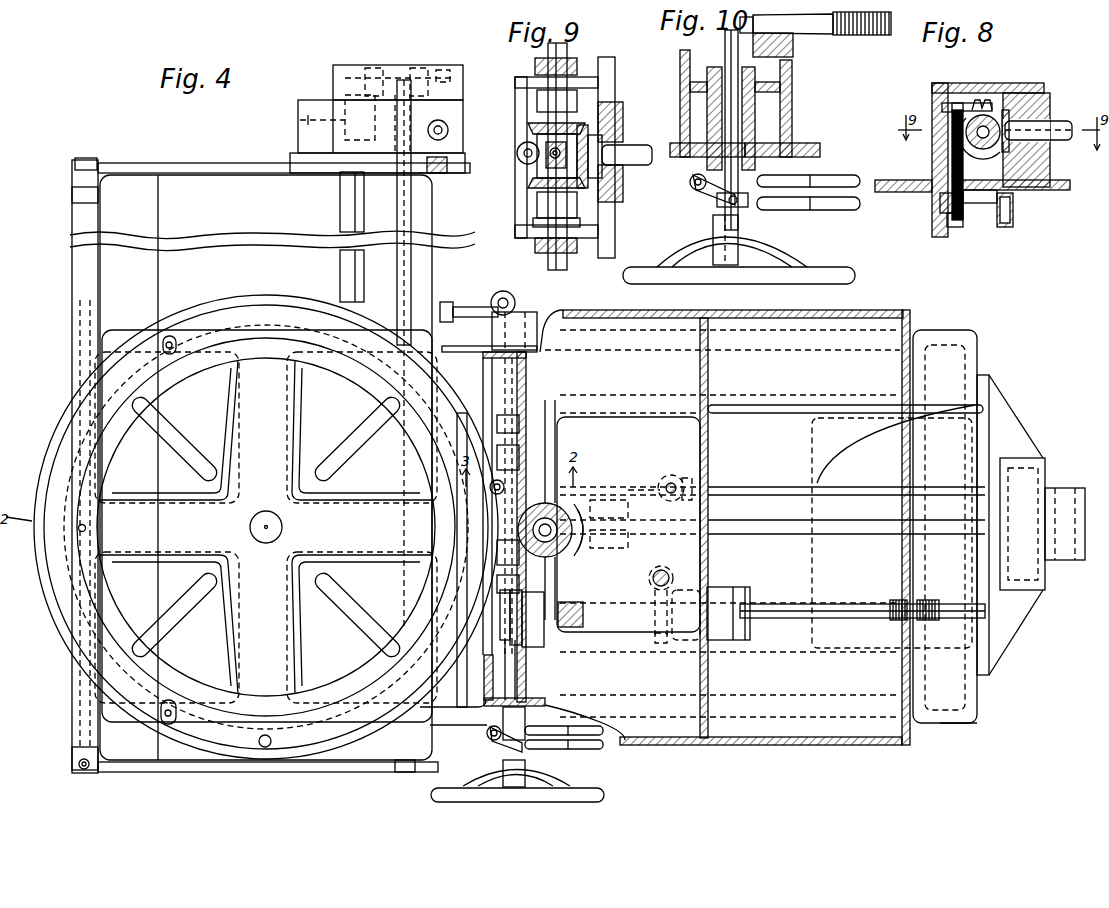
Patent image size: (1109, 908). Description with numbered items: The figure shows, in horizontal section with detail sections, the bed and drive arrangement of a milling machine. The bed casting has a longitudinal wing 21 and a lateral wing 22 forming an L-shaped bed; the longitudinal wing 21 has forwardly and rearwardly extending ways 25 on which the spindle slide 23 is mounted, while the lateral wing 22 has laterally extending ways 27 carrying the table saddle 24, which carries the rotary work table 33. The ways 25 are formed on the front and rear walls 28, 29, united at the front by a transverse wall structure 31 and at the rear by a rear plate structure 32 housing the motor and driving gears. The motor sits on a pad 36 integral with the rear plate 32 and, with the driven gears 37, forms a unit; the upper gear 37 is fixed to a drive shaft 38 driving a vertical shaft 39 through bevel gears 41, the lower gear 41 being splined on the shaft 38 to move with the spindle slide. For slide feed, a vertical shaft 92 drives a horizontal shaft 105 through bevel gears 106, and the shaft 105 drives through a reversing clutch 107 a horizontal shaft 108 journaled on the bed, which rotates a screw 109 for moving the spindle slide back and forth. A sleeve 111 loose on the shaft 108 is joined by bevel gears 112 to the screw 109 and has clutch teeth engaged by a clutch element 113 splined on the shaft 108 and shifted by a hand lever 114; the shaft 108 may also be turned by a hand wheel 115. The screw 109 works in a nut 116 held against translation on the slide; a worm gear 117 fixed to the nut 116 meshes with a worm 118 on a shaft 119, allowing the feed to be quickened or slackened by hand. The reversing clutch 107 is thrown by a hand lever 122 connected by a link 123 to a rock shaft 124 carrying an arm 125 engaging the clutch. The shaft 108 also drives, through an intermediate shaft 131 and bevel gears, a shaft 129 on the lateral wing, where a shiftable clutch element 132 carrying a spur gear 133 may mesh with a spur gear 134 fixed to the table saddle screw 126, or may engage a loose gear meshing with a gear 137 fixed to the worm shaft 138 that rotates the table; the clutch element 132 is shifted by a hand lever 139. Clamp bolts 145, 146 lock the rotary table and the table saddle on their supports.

In FIG. 4, the longitudinal wing 21 is at (948, 723).
In FIG. 4, the lateral wing 22 is at (266, 467).
In FIG. 4, the spindle slide 23 is at (798, 743).
In FIG. 4, the table saddle 24 is at (294, 527).
In FIG. 4, the longitudinal ways 25 is at (958, 342).
In FIG. 4, the laterally extending ways 27 is at (365, 299).
In FIG. 4, the front wall 28 is at (543, 698).
In FIG. 10, the front wall 28 is at (808, 146).
In FIG. 4, the rear wall 29 is at (858, 356).
In FIG. 4, the transverse wall structure 31 is at (484, 682).
In FIG. 9, the transverse wall structure 31 is at (612, 207).
In FIG. 10, the transverse wall structure 31 is at (680, 88).
In FIG. 8, the transverse wall structure 31 is at (1045, 160).
In FIG. 4, the rear plate structure 32 is at (988, 661).
In FIG. 4, the rotary work table 33 is at (266, 527).
In FIG. 4, the pad 36 is at (858, 441).
In FIG. 4, the driven gears 37 is at (1025, 470).
In FIG. 4, the drive shaft 38 is at (927, 534).
In FIG. 4, the vertical shaft 39 is at (550, 539).
In FIG. 4, the bevel gears 41 is at (558, 510).
In FIG. 4, the vertical shaft 92 is at (665, 488).
In FIG. 4, the horizontal shaft 105 is at (779, 486).
In FIG. 9, the horizontal shaft 105 is at (640, 148).
In FIG. 8, the horizontal shaft 105 is at (1068, 121).
In FIG. 4, the bevel gears 106 is at (686, 476).
In FIG. 9, the reversing clutch 107 is at (590, 186).
In FIG. 8, the reversing clutch 107 is at (1005, 110).
In FIG. 4, the horizontal shaft 108 is at (516, 387).
In FIG. 9, the horizontal shaft 108 is at (548, 56).
In FIG. 10, the horizontal shaft 108 is at (728, 62).
In FIG. 8, the horizontal shaft 108 is at (955, 108).
In FIG. 4, the screw 109 is at (801, 606).
In FIG. 10, the screw 109 is at (850, 37).
In FIG. 4, the sleeve 111 is at (523, 663).
In FIG. 10, the sleeve 111 is at (748, 124).
In FIG. 4, the bevel gears 112 is at (530, 592).
In FIG. 10, the bevel gears 112 is at (773, 60).
In FIG. 4, the clutch element 113 is at (502, 747).
In FIG. 10, the clutch element 113 is at (717, 200).
In FIG. 4, the hand lever 114 is at (584, 750).
In FIG. 10, the hand lever 114 is at (833, 209).
In FIG. 4, the hand wheel 115 is at (597, 792).
In FIG. 10, the hand wheel 115 is at (852, 280).
In FIG. 4, the nut 116 is at (733, 587).
In FIG. 4, the worm gear 117 is at (661, 645).
In FIG. 4, the worm 118 is at (662, 570).
In FIG. 4, the shaft 119 is at (668, 586).
In FIG. 4, the hand lever 122 is at (610, 720).
In FIG. 10, the hand lever 122 is at (842, 176).
In FIG. 8, the link 123 is at (1013, 220).
In FIG. 4, the rock shaft 124 is at (490, 490).
In FIG. 9, the rock shaft 124 is at (528, 143).
In FIG. 8, the rock shaft 124 is at (950, 151).
In FIG. 9, the arm 125 is at (540, 172).
In FIG. 8, the arm 125 is at (970, 115).
In FIG. 4, the table saddle screw 126 is at (340, 196).
In FIG. 4, the shaft 129 is at (446, 242).
In FIG. 4, the intermediate shaft 131 is at (472, 310).
In FIG. 4, the shiftable clutch element 132 is at (380, 123).
In FIG. 4, the spur gear 133 is at (393, 110).
In FIG. 4, the spur gear 134 is at (300, 120).
In FIG. 4, the gear 137 is at (445, 72).
In FIG. 4, the worm shaft 138 is at (412, 188).
In FIG. 4, the hand lever 139 is at (82, 771).
In FIG. 4, the clamp bolt 145 is at (78, 529).
In FIG. 4, the clamp bolt 146 is at (174, 344).